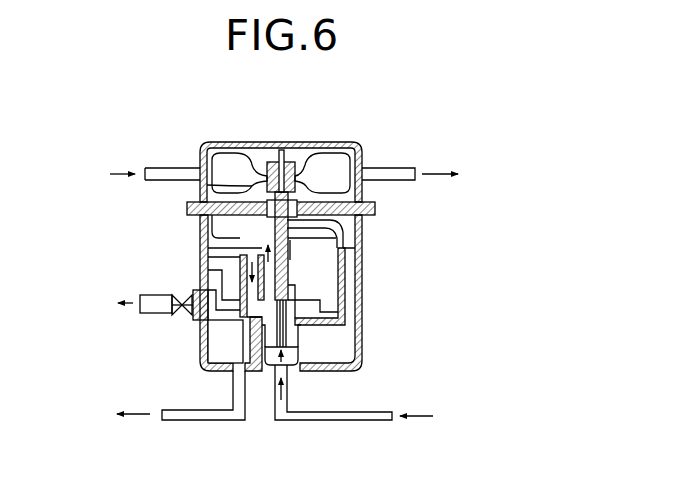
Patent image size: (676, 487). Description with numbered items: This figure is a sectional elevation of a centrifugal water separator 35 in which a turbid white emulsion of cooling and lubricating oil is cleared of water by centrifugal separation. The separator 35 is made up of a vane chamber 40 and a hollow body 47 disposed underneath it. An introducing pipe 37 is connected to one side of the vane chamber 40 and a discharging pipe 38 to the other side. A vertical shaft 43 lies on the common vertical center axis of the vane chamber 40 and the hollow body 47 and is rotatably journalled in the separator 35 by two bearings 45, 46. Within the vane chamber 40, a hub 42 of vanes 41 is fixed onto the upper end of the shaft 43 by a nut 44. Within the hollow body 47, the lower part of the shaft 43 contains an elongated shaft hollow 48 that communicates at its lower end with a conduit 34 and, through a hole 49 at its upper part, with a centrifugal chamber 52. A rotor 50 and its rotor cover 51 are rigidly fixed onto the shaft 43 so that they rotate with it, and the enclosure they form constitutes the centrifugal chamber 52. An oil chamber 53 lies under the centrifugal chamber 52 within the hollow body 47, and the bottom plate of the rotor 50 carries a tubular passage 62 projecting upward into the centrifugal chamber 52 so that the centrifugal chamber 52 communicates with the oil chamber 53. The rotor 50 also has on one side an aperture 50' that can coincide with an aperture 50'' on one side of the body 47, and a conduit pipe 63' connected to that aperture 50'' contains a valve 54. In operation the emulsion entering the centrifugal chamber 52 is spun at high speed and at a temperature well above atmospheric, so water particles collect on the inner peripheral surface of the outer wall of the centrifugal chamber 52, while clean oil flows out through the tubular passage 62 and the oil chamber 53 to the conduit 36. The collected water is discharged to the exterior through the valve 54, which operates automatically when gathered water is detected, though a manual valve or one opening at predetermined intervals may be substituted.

The conduit 34 is at (342, 420).
The centrifugal water separator 35 is at (360, 144).
The conduit 36 is at (205, 420).
The introducing pipe 37 is at (167, 168).
The discharging pipe 38 is at (400, 162).
The vane chamber 40 is at (308, 158).
The vanes 41 is at (225, 160).
The hub 42 is at (270, 170).
The vertical shaft 43 is at (304, 269).
The nut 44 is at (291, 165).
The bearing 45 is at (218, 184).
The bearing 46 is at (300, 345).
The hollow body 47 is at (363, 328).
The shaft hollow 48 is at (285, 303).
The hole 49 is at (287, 283).
The rotor 50 is at (212, 282).
The aperture 50' is at (179, 276).
The aperture 50'' is at (157, 290).
The rotor cover 51 is at (225, 236).
The centrifugal chamber 52 is at (335, 236).
The oil chamber 53 is at (216, 362).
The valve 54 is at (180, 303).
The tubular passage 62 is at (208, 335).
The conduit pipe 63' is at (134, 326).